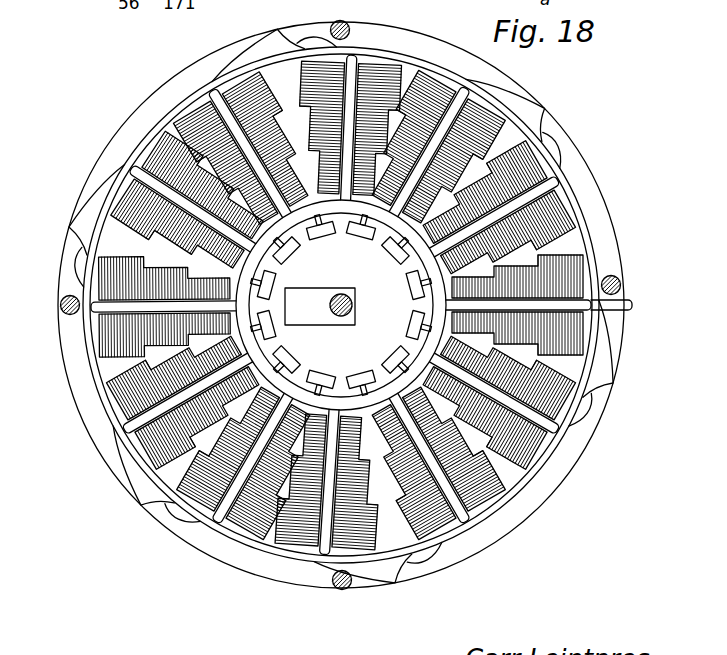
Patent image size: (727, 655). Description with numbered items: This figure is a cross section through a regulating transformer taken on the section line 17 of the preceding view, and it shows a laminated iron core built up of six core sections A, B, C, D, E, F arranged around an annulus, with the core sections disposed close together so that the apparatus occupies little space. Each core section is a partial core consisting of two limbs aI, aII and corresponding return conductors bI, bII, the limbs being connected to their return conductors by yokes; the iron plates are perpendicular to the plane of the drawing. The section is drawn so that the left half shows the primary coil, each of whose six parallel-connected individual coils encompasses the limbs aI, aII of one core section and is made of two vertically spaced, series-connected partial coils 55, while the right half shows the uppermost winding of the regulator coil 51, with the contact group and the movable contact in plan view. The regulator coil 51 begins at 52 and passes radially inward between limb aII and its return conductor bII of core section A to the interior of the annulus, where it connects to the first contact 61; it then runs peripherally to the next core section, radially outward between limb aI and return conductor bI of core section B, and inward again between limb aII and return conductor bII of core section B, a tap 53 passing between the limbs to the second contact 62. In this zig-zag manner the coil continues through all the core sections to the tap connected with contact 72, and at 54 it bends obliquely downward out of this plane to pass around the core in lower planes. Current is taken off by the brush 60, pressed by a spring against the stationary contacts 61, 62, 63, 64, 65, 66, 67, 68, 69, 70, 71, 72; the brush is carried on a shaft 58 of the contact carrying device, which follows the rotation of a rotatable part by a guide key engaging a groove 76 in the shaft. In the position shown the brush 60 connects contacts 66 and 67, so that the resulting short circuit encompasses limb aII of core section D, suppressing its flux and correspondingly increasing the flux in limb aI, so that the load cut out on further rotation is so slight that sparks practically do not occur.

The fastening bolt 17 is at (634, 305).
The regulator coil 51 is at (560, 205).
The beginning of regulator coil 52 is at (626, 299).
The tap 53 is at (562, 200).
The bend of regulator coil 54 is at (597, 323).
The partial coil 55 is at (243, 73).
The shaft 58 is at (351, 299).
The brush 60 is at (285, 301).
The first contact 61 is at (412, 283).
The second contact 62 is at (399, 257).
The stationary contact 63 is at (359, 236).
The stationary contact 64 is at (325, 236).
The stationary contact 65 is at (292, 250).
The stationary contact 66 is at (275, 280).
The stationary contact 67 is at (276, 328).
The stationary contact 68 is at (291, 356).
The stationary contact 69 is at (325, 380).
The stationary contact 70 is at (362, 375).
The stationary contact 71 is at (392, 358).
The last contact 72 is at (408, 322).
The groove 76 is at (342, 318).
The limb aI is at (582, 132).
The limb aII is at (636, 358).
The return conductor bI is at (558, 222).
The return conductor bII is at (572, 277).
The core section A is at (615, 383).
The core section B is at (524, 113).
The core section C is at (277, 30).
The core section D is at (65, 228).
The core section E is at (138, 504).
The core section F is at (401, 590).